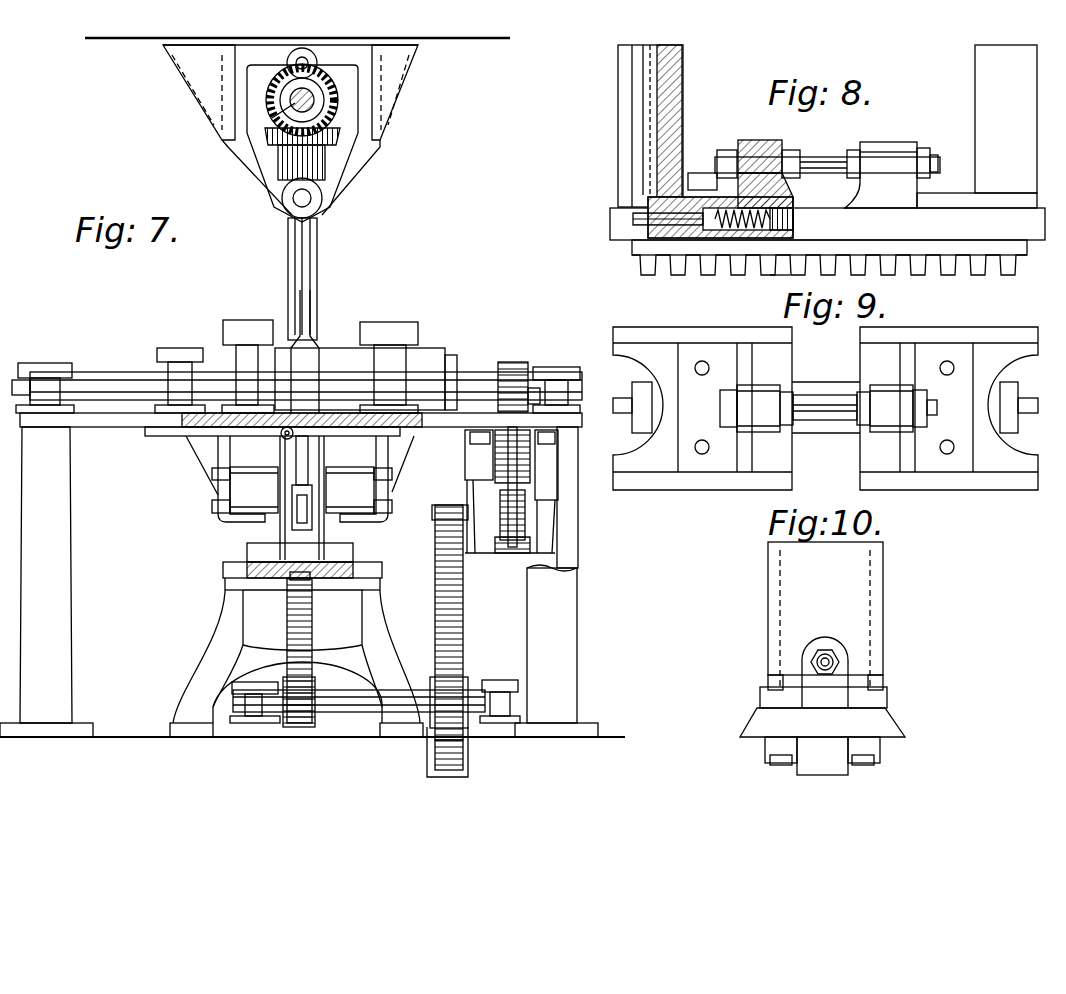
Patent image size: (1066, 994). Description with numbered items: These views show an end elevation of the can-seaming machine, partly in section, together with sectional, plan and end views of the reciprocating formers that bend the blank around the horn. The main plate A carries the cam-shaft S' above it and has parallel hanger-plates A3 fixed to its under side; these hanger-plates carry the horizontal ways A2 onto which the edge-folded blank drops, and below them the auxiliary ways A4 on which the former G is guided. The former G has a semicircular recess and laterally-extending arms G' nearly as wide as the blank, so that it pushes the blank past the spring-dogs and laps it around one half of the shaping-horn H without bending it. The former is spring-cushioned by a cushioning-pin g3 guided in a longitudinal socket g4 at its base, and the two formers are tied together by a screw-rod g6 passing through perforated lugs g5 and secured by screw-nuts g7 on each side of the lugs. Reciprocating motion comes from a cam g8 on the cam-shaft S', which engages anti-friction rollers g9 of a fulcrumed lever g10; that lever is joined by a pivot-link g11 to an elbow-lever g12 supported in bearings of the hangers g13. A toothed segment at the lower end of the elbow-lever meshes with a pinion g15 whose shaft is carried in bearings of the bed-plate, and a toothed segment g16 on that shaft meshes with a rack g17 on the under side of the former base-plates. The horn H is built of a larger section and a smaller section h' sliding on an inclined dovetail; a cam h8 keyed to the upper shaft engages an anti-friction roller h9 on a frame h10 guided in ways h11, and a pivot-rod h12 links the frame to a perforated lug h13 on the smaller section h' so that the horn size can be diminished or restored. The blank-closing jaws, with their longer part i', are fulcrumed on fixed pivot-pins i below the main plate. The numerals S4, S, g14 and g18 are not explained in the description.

In FIG. 7, the ways h11 is at (222, 88).
In FIG. 7, the frame h10 is at (257, 150).
In FIG. 7, the anti-friction roller h9 is at (315, 60).
In FIG. 7, the cam h8 is at (306, 122).
In FIG. 7, the gear shaft S4 is at (270, 120).
In FIG. 7, the pivot-rod h12 is at (292, 262).
In FIG. 7, the pivot-pins i is at (313, 349).
In FIG. 7, the longer part of blank-closing jaw i' is at (320, 366).
In FIG. 7, the main shaft S is at (297, 377).
In FIG. 7, the cam-shaft S' is at (467, 381).
In FIG. 7, the cam g8 is at (513, 375).
In FIG. 7, the anti-friction rollers g9 is at (528, 400).
In FIG. 7, the main plate A is at (120, 427).
In FIG. 7, the perforated lug h13 is at (273, 439).
In FIG. 7, the laterally-extending arms G' is at (302, 479).
In FIG. 7, the former G is at (314, 504).
In FIG. 8, the former G is at (827, 126).
In FIG. 9, the former G is at (825, 408).
In FIG. 10, the former G is at (825, 616).
In FIG. 7, the shaping-horn H is at (312, 446).
In FIG. 7, the smaller section of horn h' is at (281, 464).
In FIG. 7, the hanger-plates A3 is at (228, 489).
In FIG. 7, the horizontal ways A2 is at (243, 525).
In FIG. 7, the auxiliary ways A4 is at (255, 560).
In FIG. 7, the elbow-lever g12 is at (446, 562).
In FIG. 7, the hangers g13 is at (478, 492).
In FIG. 7, the fulcrumed lever g10 is at (513, 460).
In FIG. 7, the pivot-link g11 is at (526, 496).
In FIG. 7, the gear wheel g14 is at (462, 622).
In FIG. 8, the gear wheel g14 is at (778, 274).
In FIG. 7, the pinion g15 is at (447, 765).
In FIG. 7, the toothed segment g16 is at (305, 628).
In FIG. 7, the rack g17 is at (297, 575).
In FIG. 8, the rack g17 is at (829, 270).
In FIG. 10, the rack g17 is at (822, 769).
In FIG. 8, the screw-nuts g7 is at (722, 152).
In FIG. 9, the screw-nuts g7 is at (826, 395).
In FIG. 8, the lugs g5 is at (827, 160).
In FIG. 9, the lugs g5 is at (825, 408).
In FIG. 10, the lugs g5 is at (825, 674).
In FIG. 8, the screw-rod g6 is at (826, 163).
In FIG. 9, the screw-rod g6 is at (818, 396).
In FIG. 10, the screw-rod g6 is at (828, 658).
In FIG. 8, the cushioning-pin g3 is at (633, 218).
In FIG. 9, the cushioning-pin g3 is at (823, 407).
In FIG. 8, the socket g4 is at (727, 232).
In FIG. 9, the link bar g18 is at (826, 423).